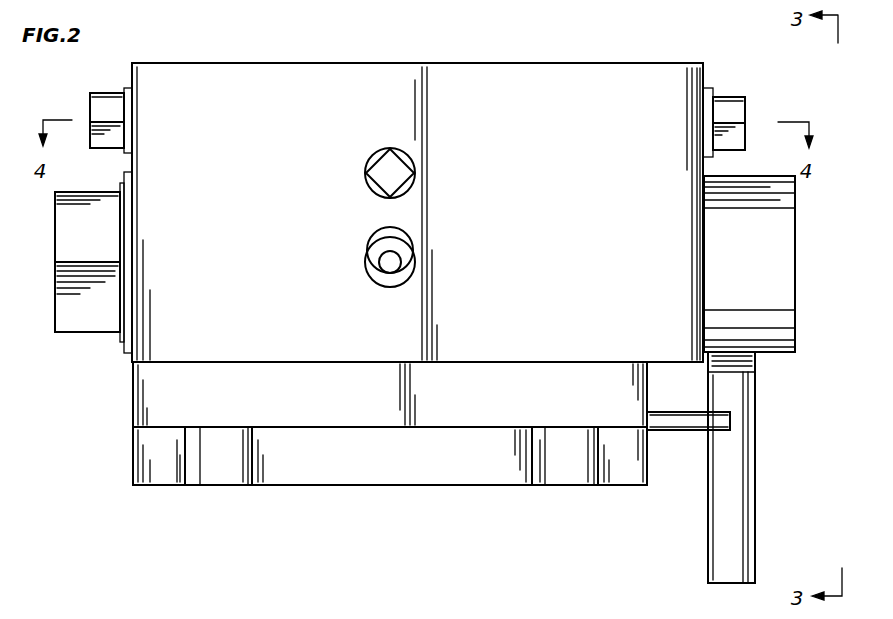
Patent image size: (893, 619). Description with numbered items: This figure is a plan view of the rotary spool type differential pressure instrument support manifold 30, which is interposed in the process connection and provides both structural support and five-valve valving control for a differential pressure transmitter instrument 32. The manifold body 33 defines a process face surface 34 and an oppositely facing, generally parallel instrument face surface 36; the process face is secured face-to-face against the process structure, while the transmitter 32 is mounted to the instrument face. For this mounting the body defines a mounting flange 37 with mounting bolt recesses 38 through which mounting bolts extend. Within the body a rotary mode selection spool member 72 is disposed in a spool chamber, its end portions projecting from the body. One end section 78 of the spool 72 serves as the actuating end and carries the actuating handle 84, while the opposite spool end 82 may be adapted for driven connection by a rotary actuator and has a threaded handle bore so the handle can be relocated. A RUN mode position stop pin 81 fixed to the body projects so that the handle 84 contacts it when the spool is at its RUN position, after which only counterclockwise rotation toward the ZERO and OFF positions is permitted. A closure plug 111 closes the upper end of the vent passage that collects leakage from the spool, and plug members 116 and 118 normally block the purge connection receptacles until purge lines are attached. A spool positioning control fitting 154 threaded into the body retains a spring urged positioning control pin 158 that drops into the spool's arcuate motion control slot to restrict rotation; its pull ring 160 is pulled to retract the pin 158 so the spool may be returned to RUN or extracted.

The rotary spool type differential pressure transmitter manifold 30 is at (590, 62).
The differential pressure transmitter instrument 32 is at (180, 340).
The manifold body 33 is at (473, 80).
The process face surface 34 is at (277, 62).
The instrument face surface 36 is at (430, 488).
The mounting flange 37 is at (357, 476).
The mounting bolt recesses 38 is at (225, 478).
The mode selection spool member 72 is at (758, 297).
The actuating end section of spool 78 is at (795, 265).
The RUN mode position stop pin 81 is at (688, 420).
The spool end 82 is at (80, 318).
The actuating handle 84 is at (737, 512).
The closure plug 111 is at (383, 164).
The plug member 116 is at (90, 105).
The plug member 118 is at (762, 114).
The spool positioning control fitting 154 is at (378, 290).
The positioning control pin 158 is at (395, 264).
The pull ring 160 is at (372, 236).